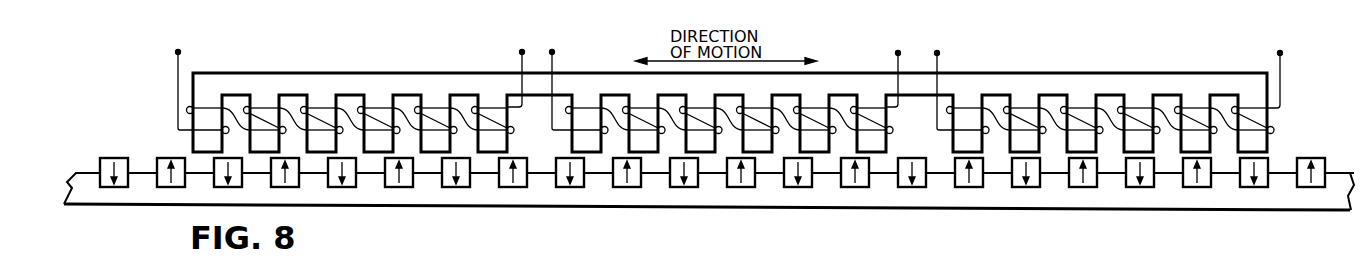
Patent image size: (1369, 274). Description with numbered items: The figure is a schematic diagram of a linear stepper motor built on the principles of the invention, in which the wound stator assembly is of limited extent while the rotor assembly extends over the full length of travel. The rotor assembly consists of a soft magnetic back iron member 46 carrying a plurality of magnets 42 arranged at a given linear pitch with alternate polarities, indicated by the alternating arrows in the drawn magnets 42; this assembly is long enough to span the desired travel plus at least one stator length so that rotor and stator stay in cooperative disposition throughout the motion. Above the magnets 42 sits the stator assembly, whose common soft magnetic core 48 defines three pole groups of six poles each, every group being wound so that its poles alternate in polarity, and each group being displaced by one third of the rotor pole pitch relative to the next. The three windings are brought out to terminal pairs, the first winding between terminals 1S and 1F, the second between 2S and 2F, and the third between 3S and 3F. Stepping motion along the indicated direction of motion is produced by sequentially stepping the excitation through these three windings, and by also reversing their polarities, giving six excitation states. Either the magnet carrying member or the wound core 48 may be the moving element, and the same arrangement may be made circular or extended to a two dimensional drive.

The magnets 42 is at (441, 180).
The soft magnetic back iron member 46 is at (477, 188).
The stator core 48 is at (1060, 87).
The phase 1 start terminal 1S is at (199, 83).
The phase 1 finish terminal 1F is at (506, 71).
The phase 2 start terminal 2S is at (576, 83).
The phase 2 finish terminal 2F is at (886, 71).
The phase 3 start terminal 3S is at (959, 83).
The phase 3 finish terminal 3F is at (1265, 72).